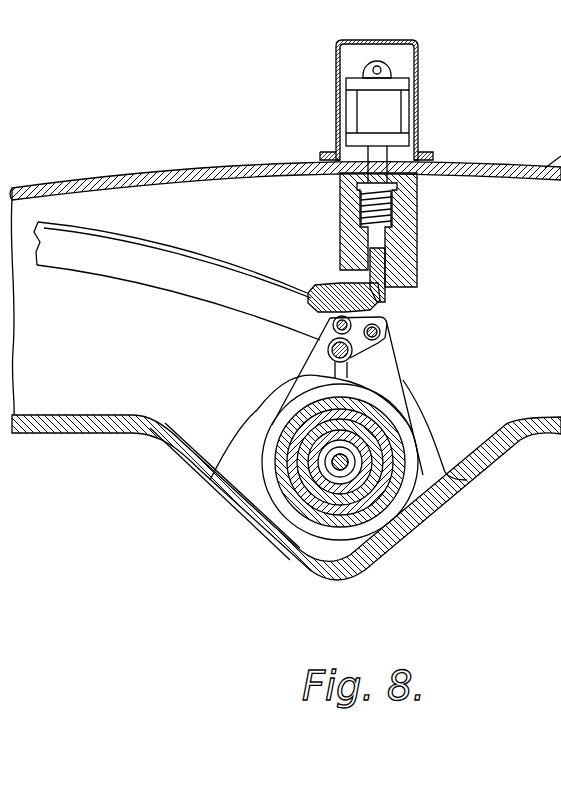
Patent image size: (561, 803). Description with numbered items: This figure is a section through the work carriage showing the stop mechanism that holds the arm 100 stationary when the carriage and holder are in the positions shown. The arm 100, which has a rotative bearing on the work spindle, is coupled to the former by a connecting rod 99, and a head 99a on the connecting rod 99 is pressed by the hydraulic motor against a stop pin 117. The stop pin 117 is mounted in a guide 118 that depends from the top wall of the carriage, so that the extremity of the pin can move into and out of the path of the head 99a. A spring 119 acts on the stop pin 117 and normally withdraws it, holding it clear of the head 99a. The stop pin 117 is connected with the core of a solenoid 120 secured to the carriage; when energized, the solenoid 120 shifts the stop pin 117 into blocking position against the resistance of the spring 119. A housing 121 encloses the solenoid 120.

The connecting rod 99 is at (226, 268).
The head 99a is at (378, 312).
The arm 100 is at (385, 379).
The stop pin 117 is at (388, 283).
The guide 118 is at (410, 241).
The spring 119 is at (392, 211).
The solenoid 120 is at (385, 125).
The housing 121 is at (337, 86).